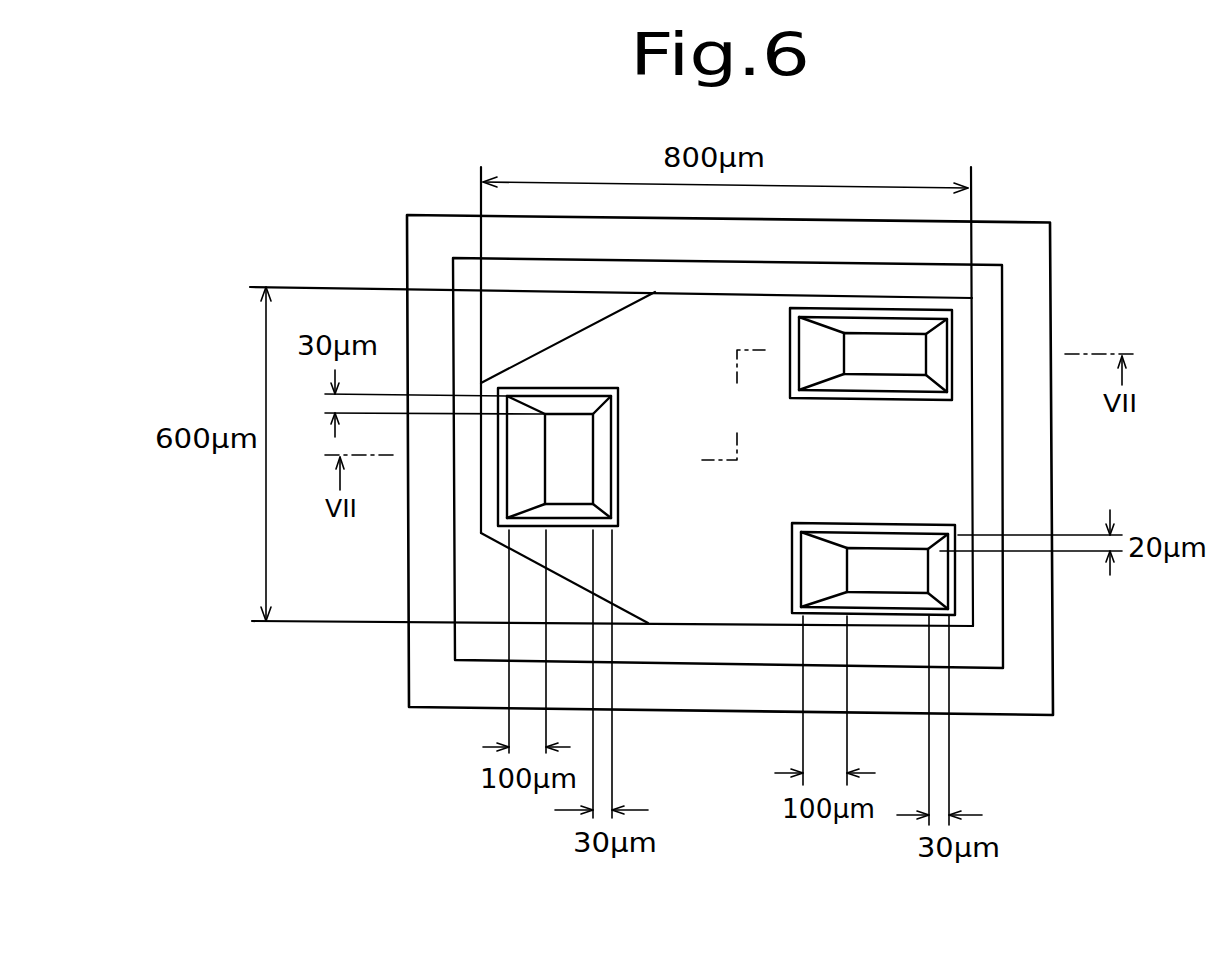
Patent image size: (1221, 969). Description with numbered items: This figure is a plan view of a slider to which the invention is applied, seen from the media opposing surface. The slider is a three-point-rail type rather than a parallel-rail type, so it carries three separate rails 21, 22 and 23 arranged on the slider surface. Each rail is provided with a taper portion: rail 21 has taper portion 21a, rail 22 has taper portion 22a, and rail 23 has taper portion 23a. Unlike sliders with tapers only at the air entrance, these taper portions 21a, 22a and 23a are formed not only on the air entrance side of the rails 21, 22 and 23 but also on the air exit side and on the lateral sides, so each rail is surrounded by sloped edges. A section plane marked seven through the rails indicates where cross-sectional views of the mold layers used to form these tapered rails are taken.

The rail 21 is at (920, 573).
The taper portion 21a is at (822, 575).
The rail 22 is at (918, 362).
The taper portion 22a is at (830, 338).
The rail 23 is at (558, 474).
The taper portion 23a is at (522, 433).